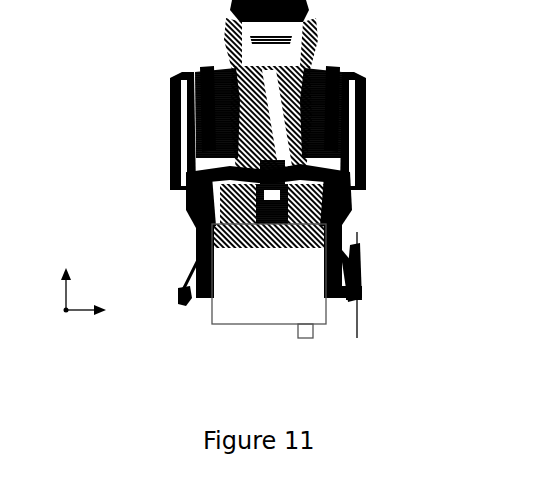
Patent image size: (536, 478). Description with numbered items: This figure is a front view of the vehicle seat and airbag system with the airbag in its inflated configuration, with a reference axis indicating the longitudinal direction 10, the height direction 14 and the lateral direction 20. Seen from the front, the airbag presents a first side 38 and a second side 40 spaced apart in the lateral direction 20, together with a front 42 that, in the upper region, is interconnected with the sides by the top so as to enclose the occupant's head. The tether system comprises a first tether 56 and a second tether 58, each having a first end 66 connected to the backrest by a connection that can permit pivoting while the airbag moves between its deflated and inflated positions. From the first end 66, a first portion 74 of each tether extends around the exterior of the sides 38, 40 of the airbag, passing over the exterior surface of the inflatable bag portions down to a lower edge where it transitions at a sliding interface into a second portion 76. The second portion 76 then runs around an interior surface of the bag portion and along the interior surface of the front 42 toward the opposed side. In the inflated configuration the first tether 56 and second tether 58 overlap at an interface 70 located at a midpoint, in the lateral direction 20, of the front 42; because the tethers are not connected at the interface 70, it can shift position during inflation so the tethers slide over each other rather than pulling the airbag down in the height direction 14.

The longitudinal direction 10 is at (55, 313).
The height direction 14 is at (66, 279).
The lateral direction 20 is at (98, 310).
The first side 38 is at (150, 62).
The second side 40 is at (388, 62).
The front 42 is at (279, 112).
The first tether 56 is at (150, 160).
The second tether 58 is at (398, 160).
The first end 66 is at (205, 68).
The interface 70 is at (274, 166).
The first portion 74 is at (180, 114).
The second portion 76 is at (194, 192).